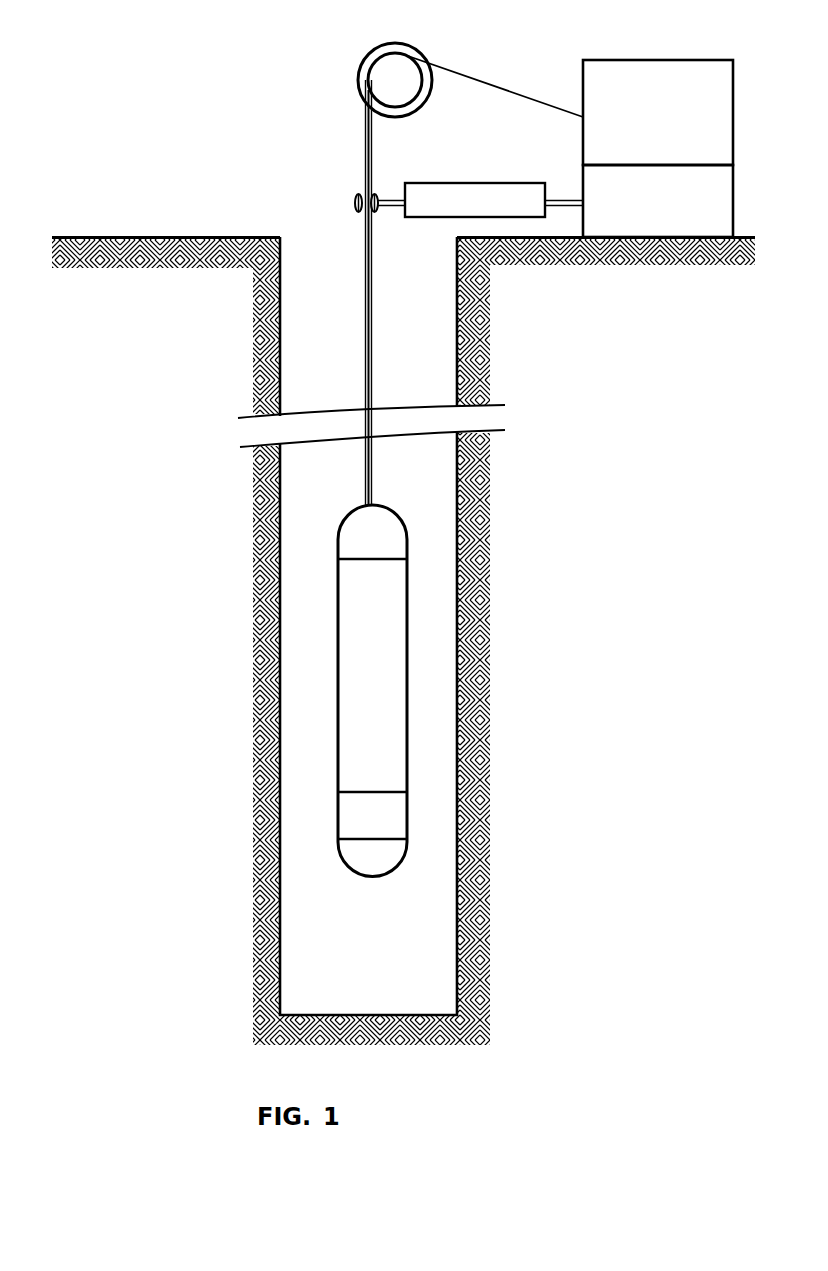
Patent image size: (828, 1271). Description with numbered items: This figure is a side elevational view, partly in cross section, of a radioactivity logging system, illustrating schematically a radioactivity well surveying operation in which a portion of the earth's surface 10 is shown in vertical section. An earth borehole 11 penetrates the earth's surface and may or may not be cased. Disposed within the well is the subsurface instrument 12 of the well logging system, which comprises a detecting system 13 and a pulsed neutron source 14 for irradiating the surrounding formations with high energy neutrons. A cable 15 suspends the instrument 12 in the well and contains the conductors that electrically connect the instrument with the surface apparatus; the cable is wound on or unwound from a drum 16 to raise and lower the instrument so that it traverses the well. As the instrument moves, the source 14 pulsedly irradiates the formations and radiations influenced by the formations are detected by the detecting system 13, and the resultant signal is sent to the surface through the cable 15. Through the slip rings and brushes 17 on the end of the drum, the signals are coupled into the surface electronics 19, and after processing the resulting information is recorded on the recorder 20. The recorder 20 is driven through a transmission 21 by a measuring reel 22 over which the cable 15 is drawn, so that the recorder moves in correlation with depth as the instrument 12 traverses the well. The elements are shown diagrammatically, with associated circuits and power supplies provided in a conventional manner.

The earth's surface 10 is at (196, 244).
The earth borehole 11 is at (332, 254).
The subsurface instrument 12 is at (407, 530).
The detecting system 13 is at (397, 710).
The pulsed neutron source 14 is at (400, 823).
The cable 15 is at (364, 162).
The drum 16 is at (421, 54).
The slip rings and brushes 17 is at (358, 82).
The surface electronics 19 is at (680, 60).
The recorder 20 is at (734, 210).
The transmission 21 is at (501, 182).
The measuring reel 22 is at (380, 194).